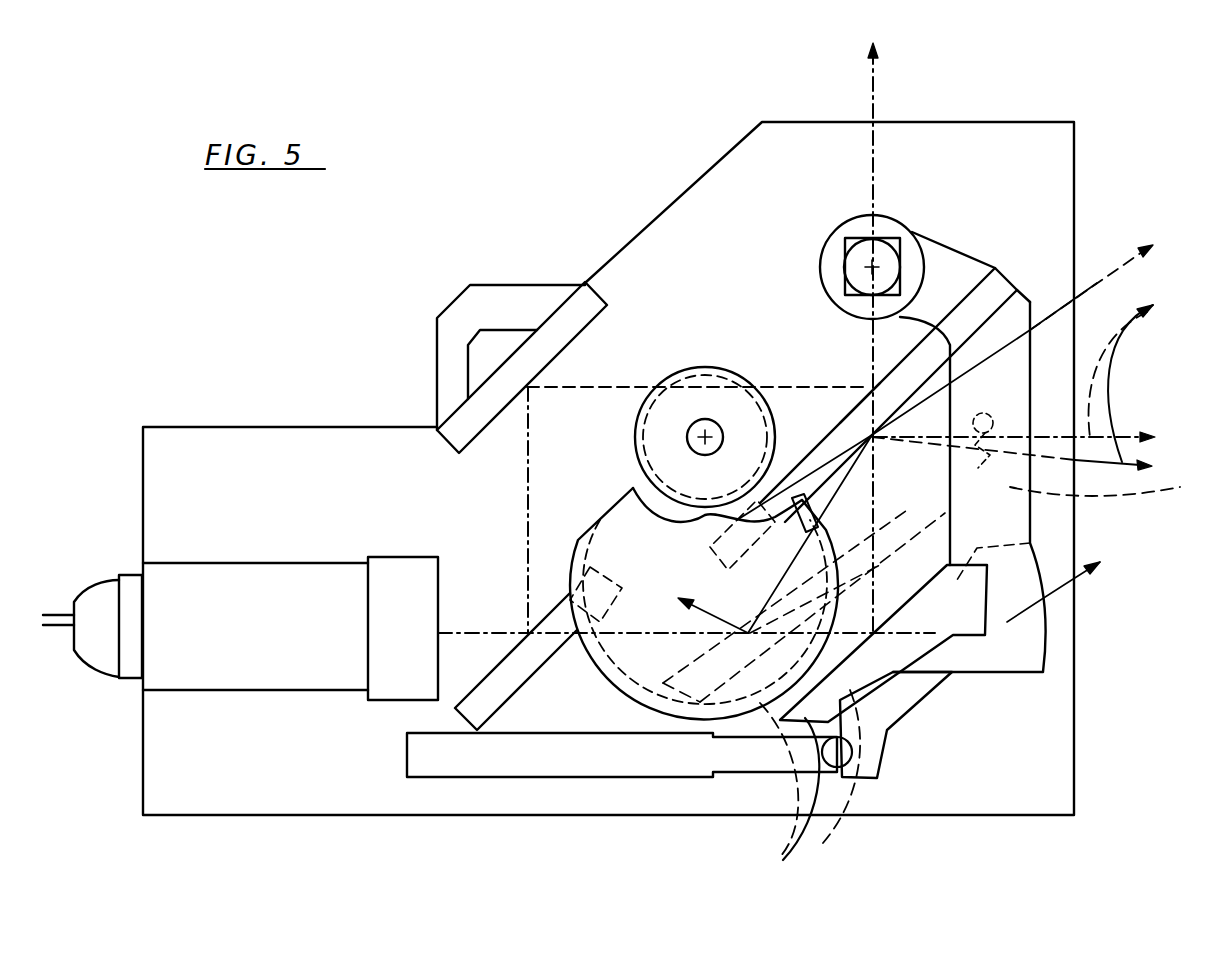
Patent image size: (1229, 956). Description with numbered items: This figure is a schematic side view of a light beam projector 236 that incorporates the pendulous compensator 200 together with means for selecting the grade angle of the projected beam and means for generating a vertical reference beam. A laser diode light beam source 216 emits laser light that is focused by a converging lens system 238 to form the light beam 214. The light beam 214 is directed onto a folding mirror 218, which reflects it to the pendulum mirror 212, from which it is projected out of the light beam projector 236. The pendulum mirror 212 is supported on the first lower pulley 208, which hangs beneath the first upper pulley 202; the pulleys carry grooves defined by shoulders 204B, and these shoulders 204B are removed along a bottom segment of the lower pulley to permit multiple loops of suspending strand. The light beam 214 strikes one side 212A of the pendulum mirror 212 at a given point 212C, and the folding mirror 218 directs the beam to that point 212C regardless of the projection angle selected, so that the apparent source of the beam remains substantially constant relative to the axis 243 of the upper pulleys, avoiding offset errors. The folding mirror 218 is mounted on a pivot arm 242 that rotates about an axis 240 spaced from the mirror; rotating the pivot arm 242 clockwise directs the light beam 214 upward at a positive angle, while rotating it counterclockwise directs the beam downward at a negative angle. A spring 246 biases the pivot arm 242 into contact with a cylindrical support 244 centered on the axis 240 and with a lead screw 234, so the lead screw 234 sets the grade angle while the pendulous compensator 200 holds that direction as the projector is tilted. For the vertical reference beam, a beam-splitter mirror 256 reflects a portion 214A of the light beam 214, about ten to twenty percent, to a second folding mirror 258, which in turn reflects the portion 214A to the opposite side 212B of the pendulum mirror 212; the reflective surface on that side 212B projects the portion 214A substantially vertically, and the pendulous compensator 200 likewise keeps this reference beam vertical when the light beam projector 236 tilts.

The pendulous compensator 200 is at (630, 362).
The first upper pulley 202 is at (732, 392).
The shoulders 204B is at (597, 553).
The first lower pulley 208 is at (630, 697).
The pendulum mirror 212 is at (958, 312).
The one side of the pendulum mirror 212A is at (1030, 302).
The opposite side of the pendulum mirror 212B is at (856, 405).
The given point on the pendulum mirror 212C is at (944, 391).
The light beam 214 is at (1100, 288).
The portion of the light beam 214A is at (878, 62).
The light beam source 216 is at (73, 651).
The folding mirror 218 is at (802, 783).
The lead screw 234 is at (650, 777).
The light beam projector 236 is at (375, 400).
The converging lens system 238 is at (383, 702).
The axis 240 is at (852, 260).
The pivot arm 242 is at (1030, 527).
The axis of the upper pulleys 243 is at (680, 440).
The cylindrical support 244 is at (882, 243).
The spring 246 is at (1119, 489).
The beam-splitter mirror 256 is at (457, 718).
The folding mirror 258 is at (563, 303).